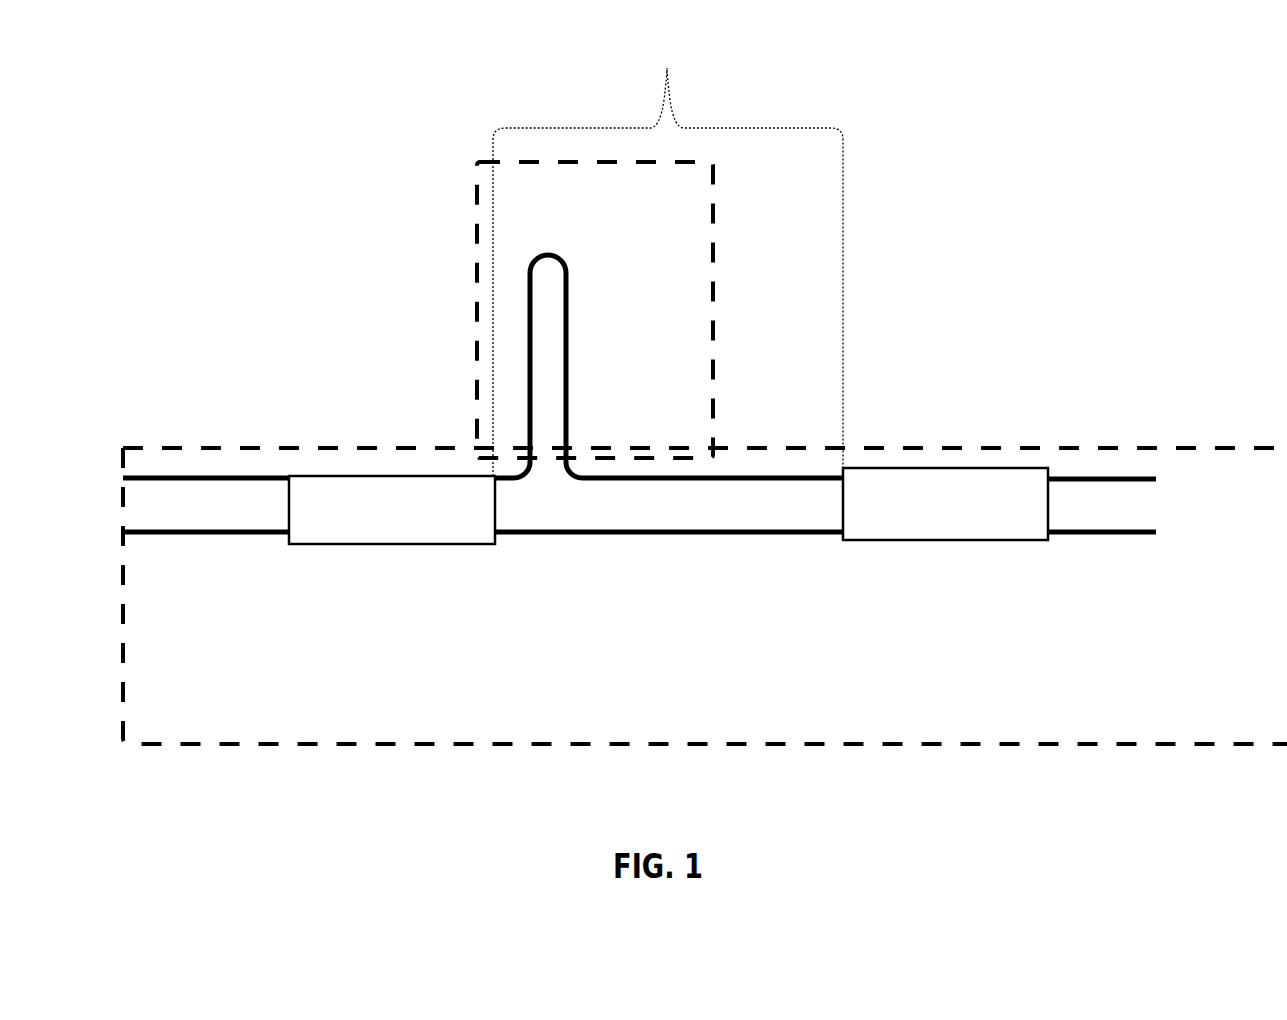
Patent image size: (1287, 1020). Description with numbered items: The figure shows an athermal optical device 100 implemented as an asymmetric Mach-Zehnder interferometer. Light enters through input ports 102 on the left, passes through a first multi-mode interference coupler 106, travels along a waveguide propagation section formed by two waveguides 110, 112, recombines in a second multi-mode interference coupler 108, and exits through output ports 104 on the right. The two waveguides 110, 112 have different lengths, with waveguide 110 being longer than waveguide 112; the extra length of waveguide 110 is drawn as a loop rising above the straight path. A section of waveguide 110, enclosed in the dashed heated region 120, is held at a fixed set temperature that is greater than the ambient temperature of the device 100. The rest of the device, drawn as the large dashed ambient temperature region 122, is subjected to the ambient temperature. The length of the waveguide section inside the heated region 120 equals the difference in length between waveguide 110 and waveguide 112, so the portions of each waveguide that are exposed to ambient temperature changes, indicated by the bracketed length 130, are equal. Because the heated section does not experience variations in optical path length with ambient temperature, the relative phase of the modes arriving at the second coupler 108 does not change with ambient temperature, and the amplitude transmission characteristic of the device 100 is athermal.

The optical device 100 is at (705, 616).
The input ports 102 is at (153, 470).
The output ports 104 is at (1108, 470).
The multi-mode interference (MMI) coupler 106 is at (392, 510).
The multi-mode interference (MMI) coupler 108 is at (945, 504).
The waveguide 110 is at (662, 470).
The waveguide 112 is at (667, 530).
The heated region 120 is at (477, 205).
The ambient temperature region 122 is at (705, 596).
The length 130 is at (668, 261).